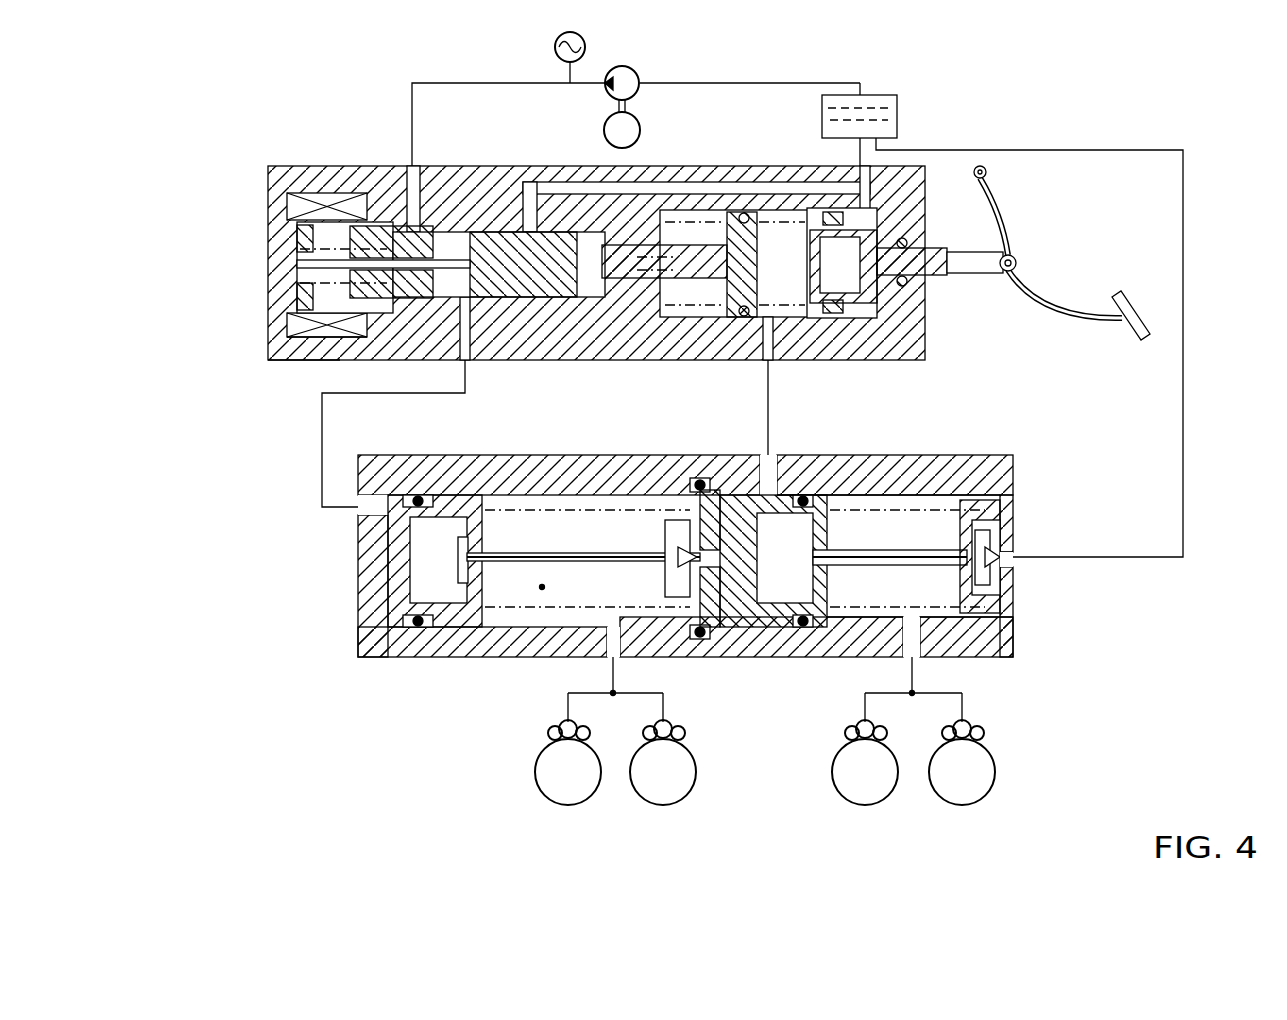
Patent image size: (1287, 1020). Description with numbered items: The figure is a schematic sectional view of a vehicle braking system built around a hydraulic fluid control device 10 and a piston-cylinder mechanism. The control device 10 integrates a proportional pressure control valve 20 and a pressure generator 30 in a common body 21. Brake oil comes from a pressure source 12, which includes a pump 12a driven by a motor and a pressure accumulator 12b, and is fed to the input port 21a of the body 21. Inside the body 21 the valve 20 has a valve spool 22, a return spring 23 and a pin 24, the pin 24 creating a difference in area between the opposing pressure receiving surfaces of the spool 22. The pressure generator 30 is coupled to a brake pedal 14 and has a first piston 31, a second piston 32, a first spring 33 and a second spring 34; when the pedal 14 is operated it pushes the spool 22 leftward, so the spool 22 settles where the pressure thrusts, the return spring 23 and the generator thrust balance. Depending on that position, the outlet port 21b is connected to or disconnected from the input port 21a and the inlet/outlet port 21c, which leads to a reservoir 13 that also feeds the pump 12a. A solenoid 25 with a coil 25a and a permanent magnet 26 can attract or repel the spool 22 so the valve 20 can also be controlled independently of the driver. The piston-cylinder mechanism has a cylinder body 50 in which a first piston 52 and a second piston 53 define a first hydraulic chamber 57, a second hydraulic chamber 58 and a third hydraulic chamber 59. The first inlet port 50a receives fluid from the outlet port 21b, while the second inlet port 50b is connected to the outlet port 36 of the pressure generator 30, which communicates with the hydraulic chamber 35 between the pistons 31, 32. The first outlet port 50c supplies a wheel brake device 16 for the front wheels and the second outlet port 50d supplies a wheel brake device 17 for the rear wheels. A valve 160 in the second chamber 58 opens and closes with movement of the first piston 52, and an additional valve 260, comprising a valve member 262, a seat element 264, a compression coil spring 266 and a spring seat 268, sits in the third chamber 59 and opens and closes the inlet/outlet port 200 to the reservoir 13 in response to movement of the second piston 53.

The hydraulic fluid control device 10 is at (235, 157).
The pressure source 12 is at (597, 57).
The pump 12a is at (641, 76).
The pressure accumulator 12b is at (557, 50).
The reservoir 13 is at (878, 122).
The brake pedal 14 is at (1076, 312).
The wheel brake device 16 is at (550, 775).
The wheel brake device 17 is at (848, 775).
The proportional pressure control valve 20 is at (445, 163).
The body 21 is at (272, 205).
The input port 21a is at (385, 227).
The outlet port 21b is at (462, 362).
The inlet/outlet port 21c is at (860, 178).
The valve spool 22 is at (385, 235).
The return spring 23 is at (317, 287).
The pin 24 is at (383, 268).
The solenoid 25 is at (340, 342).
The coil 25a is at (317, 340).
The permanent magnet 26 is at (297, 205).
The pressure generator 30 is at (718, 162).
The first piston 31 is at (866, 325).
The second piston 32 is at (793, 302).
The simulator piston 33 is at (727, 312).
The second spring 34 is at (652, 280).
The hydraulic chamber 35 is at (773, 216).
The outlet port 36 is at (762, 362).
The cylinder body 50 is at (615, 452).
The first inlet port 50a is at (360, 512).
The second inlet port 50b is at (765, 452).
The first outlet port 50c is at (660, 660).
The second outlet port 50d is at (873, 634).
The first piston 52 is at (457, 503).
The second piston 53 is at (745, 600).
The first hydraulic chamber 57 is at (360, 596).
The second hydraulic chamber 58 is at (542, 587).
The third hydraulic chamber 59 is at (830, 627).
The valve 160 is at (595, 532).
The inlet/outlet port 200 is at (1013, 562).
The valve 260 is at (897, 530).
The valve member 262 is at (1008, 542).
The valve chamber 264 is at (968, 630).
The compression coil spring 266 is at (828, 470).
The spring seat 268 is at (985, 538).